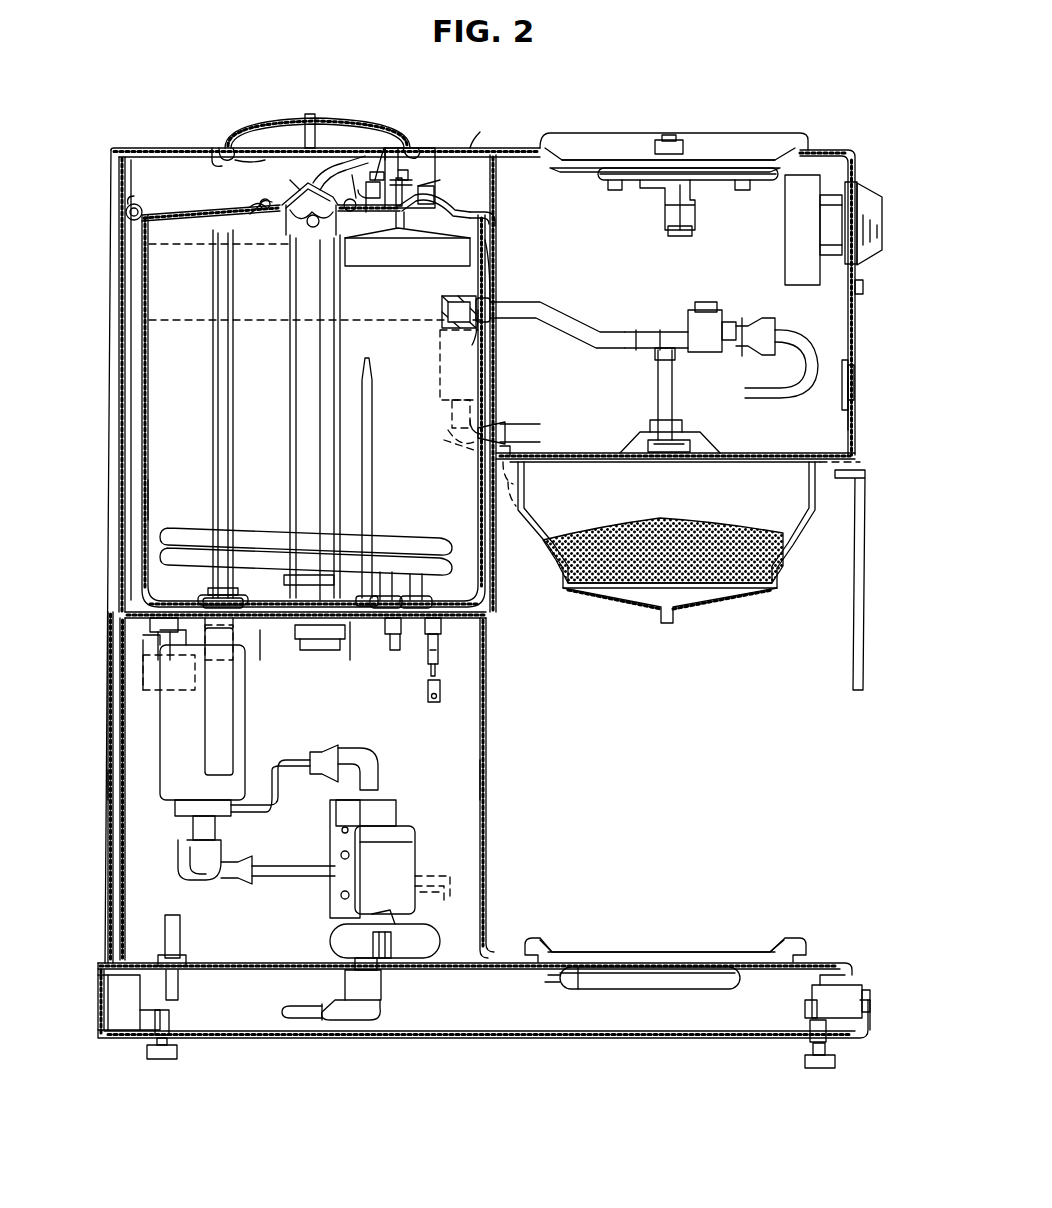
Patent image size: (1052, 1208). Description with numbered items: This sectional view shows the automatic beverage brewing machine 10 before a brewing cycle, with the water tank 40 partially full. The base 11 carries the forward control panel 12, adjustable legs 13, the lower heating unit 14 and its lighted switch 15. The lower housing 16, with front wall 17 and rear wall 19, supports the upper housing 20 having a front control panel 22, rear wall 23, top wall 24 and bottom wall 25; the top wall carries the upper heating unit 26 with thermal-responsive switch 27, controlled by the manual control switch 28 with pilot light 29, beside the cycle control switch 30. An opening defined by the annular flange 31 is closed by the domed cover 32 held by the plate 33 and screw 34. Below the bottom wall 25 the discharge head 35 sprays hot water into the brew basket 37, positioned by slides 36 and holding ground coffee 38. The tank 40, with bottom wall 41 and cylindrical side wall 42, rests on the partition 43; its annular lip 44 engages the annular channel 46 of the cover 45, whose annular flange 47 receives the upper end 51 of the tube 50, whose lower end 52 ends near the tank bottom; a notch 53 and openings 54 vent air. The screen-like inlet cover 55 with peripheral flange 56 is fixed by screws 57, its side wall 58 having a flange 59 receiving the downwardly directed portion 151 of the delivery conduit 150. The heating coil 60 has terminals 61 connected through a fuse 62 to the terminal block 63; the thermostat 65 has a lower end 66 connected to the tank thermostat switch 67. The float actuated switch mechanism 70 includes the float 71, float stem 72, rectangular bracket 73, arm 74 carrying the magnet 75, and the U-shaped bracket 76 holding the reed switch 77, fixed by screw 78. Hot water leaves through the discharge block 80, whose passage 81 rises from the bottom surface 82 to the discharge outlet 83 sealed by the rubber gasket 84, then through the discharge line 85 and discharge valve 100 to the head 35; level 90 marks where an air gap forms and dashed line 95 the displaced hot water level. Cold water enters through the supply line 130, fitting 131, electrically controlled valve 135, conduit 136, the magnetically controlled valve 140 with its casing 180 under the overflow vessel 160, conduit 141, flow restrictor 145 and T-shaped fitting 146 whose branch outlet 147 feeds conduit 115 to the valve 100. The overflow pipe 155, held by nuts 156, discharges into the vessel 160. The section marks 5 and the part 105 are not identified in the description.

The automatic beverage brewing machine 10 is at (162, 102).
The base portion 11 is at (372, 1040).
The forward control panel 12 is at (858, 1026).
The adjustably mounted legs 13 is at (178, 1054).
The lower heating unit 14 is at (652, 962).
The lighted switch 15 is at (862, 1000).
The lower housing 16 is at (114, 556).
The front wall 17 is at (486, 752).
The rear wall 19 is at (112, 790).
The upper housing 20 is at (120, 275).
The front control panel 22 is at (852, 380).
The rear wall 23 is at (120, 322).
The top wall 24 is at (472, 148).
The bottom wall 25 is at (814, 452).
The upper heating unit 26 is at (620, 166).
The thermal-responsive switch 27 is at (672, 136).
The manual control switch 28 is at (880, 212).
The pilot light 29 is at (862, 290).
The cycle control switch 30 is at (855, 398).
The annular flange 31 is at (218, 162).
The domed cover 32 is at (262, 112).
The plate 33 is at (275, 150).
The screw 34 is at (310, 114).
The discharge head 35 is at (640, 450).
The slides 36 is at (512, 490).
The brew basket 37 is at (560, 570).
The ground coffee 38 is at (756, 512).
The water tank 40 is at (140, 405).
The bottom wall 41 is at (175, 618).
The cylindrical side wall 42 is at (142, 492).
The partition 43 is at (128, 612).
The annular lip 44 is at (126, 213).
The cover 45 is at (168, 212).
The annular channel 46 is at (126, 202).
The annular flange 47 is at (284, 208).
The upstanding tube 50 is at (300, 294).
The upper end of tube 51 is at (288, 238).
The lower end of tube 52 is at (318, 586).
The rectangular notch 53 is at (298, 182).
The openings 54 is at (312, 228).
The inlet cover 55 is at (274, 198).
The outer peripheral flange 56 is at (258, 200).
The screws 57 is at (256, 206).
The side wall 58 is at (316, 186).
The annular flange 59 is at (356, 189).
The heating coil 60 is at (402, 544).
The terminals 61 is at (425, 676).
The fuse 62 is at (428, 704).
The terminal block 63 is at (324, 644).
The thermostat 65 is at (372, 440).
The lower end of thermostat 66 is at (356, 654).
The tank thermostat switch 67 is at (152, 675).
The float actuated switch mechanism 70 is at (455, 176).
The float 71 is at (416, 260).
The float stem 72 is at (434, 188).
The rectangular bracket 73 is at (404, 176).
The arm 74 is at (412, 182).
The magnet 75 is at (382, 172).
The U-shaped bracket 76 is at (368, 180).
The reed switch 77 is at (368, 186).
The screw 78 is at (376, 176).
The discharge block 80 is at (476, 300).
The vertically disposed passage 81 is at (454, 322).
The bottom surface 82 is at (480, 330).
The discharge outlet 83 is at (490, 302).
The rubber gasket 84 is at (488, 258).
The discharge line 85 is at (566, 322).
The water level 90 is at (192, 318).
The dashed line 95 is at (178, 240).
The discharge valve 100 is at (682, 310).
The valve outlet pipe 105 is at (660, 390).
The conduit 115 is at (790, 342).
The water supply line 130 is at (312, 1004).
The fitting 131 is at (382, 1004).
The electrically controlled valve 135 is at (326, 932).
The conduit 136 is at (288, 758).
The float-operated magnetically controlled valve 140 is at (160, 818).
The conduit 141 is at (456, 806).
The flow restrictor 145 is at (478, 366).
The T-shaped fitting 146 is at (480, 396).
The branch outlet 147 is at (446, 440).
The delivery conduit 150 is at (472, 205).
The downwardly directed portion 151 is at (330, 184).
The overflow pipe 155 is at (258, 412).
The nuts 156 is at (242, 600).
The overflow vessel 160 is at (178, 734).
The valve casing 180 is at (218, 828).
The section line 5- 5 is at (133, 643).